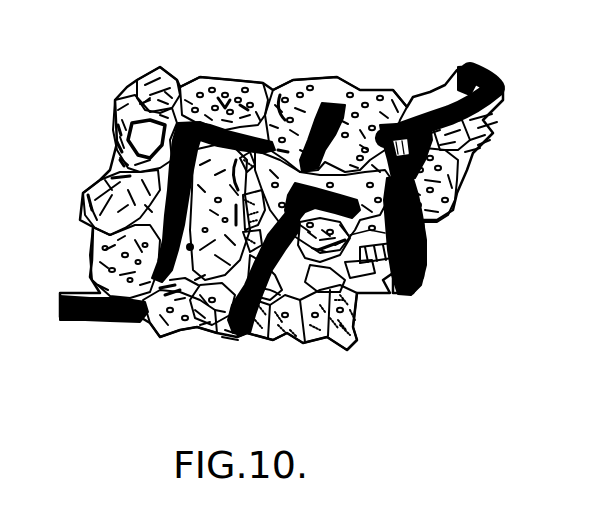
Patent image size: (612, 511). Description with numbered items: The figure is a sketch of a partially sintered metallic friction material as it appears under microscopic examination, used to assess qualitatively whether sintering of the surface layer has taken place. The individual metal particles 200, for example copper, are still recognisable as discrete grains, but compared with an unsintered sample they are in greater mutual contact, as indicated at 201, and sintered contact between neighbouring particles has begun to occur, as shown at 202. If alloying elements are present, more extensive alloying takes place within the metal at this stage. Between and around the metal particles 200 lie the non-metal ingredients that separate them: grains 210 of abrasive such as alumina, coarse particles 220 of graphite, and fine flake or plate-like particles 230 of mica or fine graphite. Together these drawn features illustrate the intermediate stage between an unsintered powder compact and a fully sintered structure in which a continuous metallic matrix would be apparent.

The metal particles 200 is at (448, 188).
The mutual contact 201 is at (268, 87).
The sintered contact 202 is at (360, 130).
The grains of abrasive 210 is at (150, 77).
The coarse particles of graphite 220 is at (408, 298).
The fine flake or plate-like particles 230 is at (245, 336).